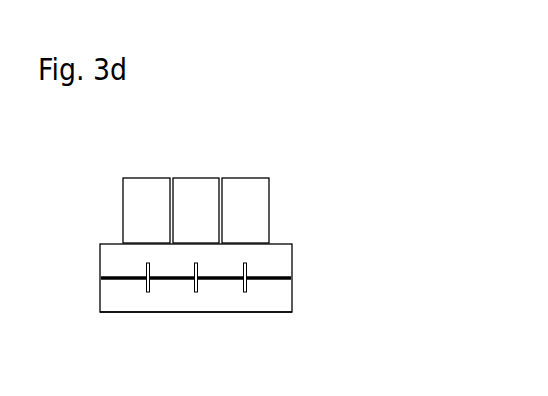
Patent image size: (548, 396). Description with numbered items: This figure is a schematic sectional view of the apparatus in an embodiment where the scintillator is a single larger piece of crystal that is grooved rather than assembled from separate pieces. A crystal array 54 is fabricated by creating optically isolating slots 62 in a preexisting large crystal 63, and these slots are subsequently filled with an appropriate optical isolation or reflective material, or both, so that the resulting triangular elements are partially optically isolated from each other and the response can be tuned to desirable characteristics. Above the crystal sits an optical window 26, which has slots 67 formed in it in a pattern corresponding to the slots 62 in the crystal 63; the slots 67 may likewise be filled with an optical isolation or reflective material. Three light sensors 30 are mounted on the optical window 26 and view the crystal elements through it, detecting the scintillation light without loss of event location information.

The optical window 26 is at (98, 245).
The light sensors 30 is at (196, 210).
The crystal array 54 is at (98, 309).
The optically isolating slots 62 is at (253, 287).
The large crystal 63 is at (152, 313).
The slots in optical window 67 is at (253, 270).